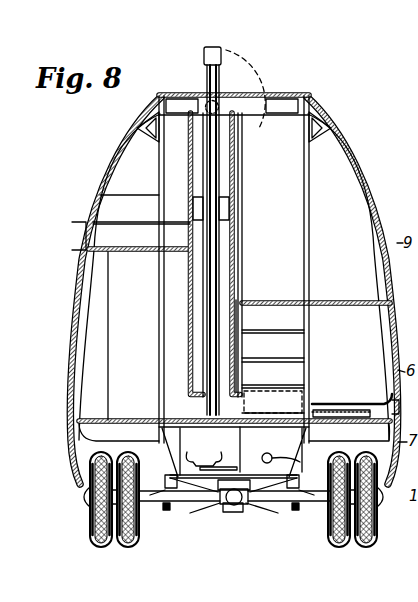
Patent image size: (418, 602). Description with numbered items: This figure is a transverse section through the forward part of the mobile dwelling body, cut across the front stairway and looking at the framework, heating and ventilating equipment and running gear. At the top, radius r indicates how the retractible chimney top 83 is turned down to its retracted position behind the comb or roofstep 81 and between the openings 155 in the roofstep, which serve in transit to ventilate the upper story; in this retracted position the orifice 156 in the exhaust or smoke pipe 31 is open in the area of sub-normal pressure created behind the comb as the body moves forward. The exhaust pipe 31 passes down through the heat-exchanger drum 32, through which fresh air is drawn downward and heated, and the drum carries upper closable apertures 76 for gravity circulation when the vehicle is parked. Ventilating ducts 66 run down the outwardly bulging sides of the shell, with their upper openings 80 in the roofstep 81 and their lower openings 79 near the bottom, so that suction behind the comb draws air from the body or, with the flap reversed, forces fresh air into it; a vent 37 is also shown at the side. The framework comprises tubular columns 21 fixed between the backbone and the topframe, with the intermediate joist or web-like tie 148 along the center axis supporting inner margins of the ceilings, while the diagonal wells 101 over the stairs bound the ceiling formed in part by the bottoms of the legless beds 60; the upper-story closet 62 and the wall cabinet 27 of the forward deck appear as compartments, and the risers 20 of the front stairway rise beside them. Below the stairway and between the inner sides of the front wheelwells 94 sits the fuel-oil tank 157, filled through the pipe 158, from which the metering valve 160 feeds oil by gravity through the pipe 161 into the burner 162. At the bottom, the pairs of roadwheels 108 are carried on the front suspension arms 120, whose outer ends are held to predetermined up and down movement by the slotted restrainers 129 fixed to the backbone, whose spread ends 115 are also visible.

The chimney top 83 is at (203, 60).
The openings in roofstep 155 is at (190, 89).
The roofstep 81 is at (158, 97).
The upper openings of ventilating ducts 80 is at (147, 130).
The ventilating ducts 66 is at (110, 191).
The diagonal wells 101 is at (141, 209).
The vent 37 is at (73, 238).
The double legless bed 60 is at (148, 252).
The columns 21 is at (158, 317).
The wall cabinet 27 is at (121, 336).
The lower openings of ventilating ducts 79 is at (97, 440).
The wheelwells 94 is at (72, 447).
The roadwheels 108 is at (95, 520).
The pipe 161 is at (176, 462).
The spread ends 115 is at (220, 508).
The burner 162 is at (213, 449).
The front suspension arms 120 is at (268, 500).
The fuel-oil tank 157 is at (273, 427).
The slotted restrainers 129 is at (298, 507).
The metering valve 160 is at (300, 448).
The filling pipe 158 is at (362, 392).
The closet 62 is at (337, 216).
The orifice 156 is at (241, 123).
The exhaust pipe 31 is at (218, 171).
The upper closable apertures 76 is at (230, 218).
The drum 32 is at (238, 248).
The intermediate joist 148 is at (236, 263).
The risers 20 is at (292, 337).
The radius r is at (245, 88).